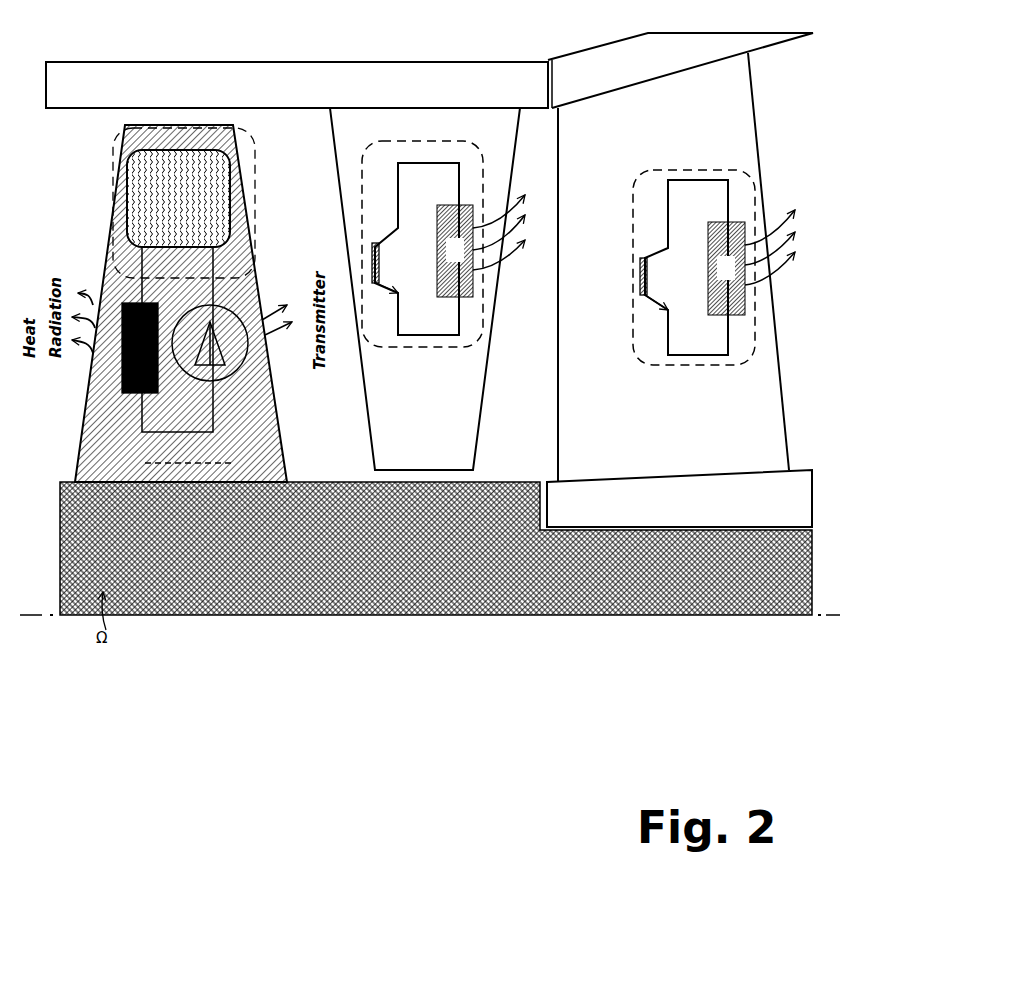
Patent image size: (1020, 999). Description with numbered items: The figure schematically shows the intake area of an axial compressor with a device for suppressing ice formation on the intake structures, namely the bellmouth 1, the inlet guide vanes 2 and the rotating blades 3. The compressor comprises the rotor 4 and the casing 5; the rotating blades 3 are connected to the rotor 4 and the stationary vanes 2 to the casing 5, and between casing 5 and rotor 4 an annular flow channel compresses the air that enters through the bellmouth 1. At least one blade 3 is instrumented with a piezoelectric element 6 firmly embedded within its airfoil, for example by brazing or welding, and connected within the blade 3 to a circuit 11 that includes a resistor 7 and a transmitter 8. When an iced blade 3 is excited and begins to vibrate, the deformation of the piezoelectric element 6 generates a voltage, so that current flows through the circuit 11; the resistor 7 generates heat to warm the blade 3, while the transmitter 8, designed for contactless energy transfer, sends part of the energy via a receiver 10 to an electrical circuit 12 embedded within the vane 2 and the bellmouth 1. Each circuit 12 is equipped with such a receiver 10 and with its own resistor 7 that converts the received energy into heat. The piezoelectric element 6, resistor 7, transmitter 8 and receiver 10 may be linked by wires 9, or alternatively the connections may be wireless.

The bellmouth 1 is at (568, 72).
The inlet guide vane 2 is at (456, 397).
The rotating blade 3 is at (140, 135).
The rotor 4 is at (436, 548).
The casing 5 is at (270, 88).
The piezoelectric element 6 is at (138, 225).
The resistor 7 is at (125, 383).
The transmitter 8 is at (247, 368).
The wires 9 is at (137, 267).
The receiver 10 is at (372, 255).
The circuit 11 is at (144, 466).
The electrical circuit 12 is at (400, 140).